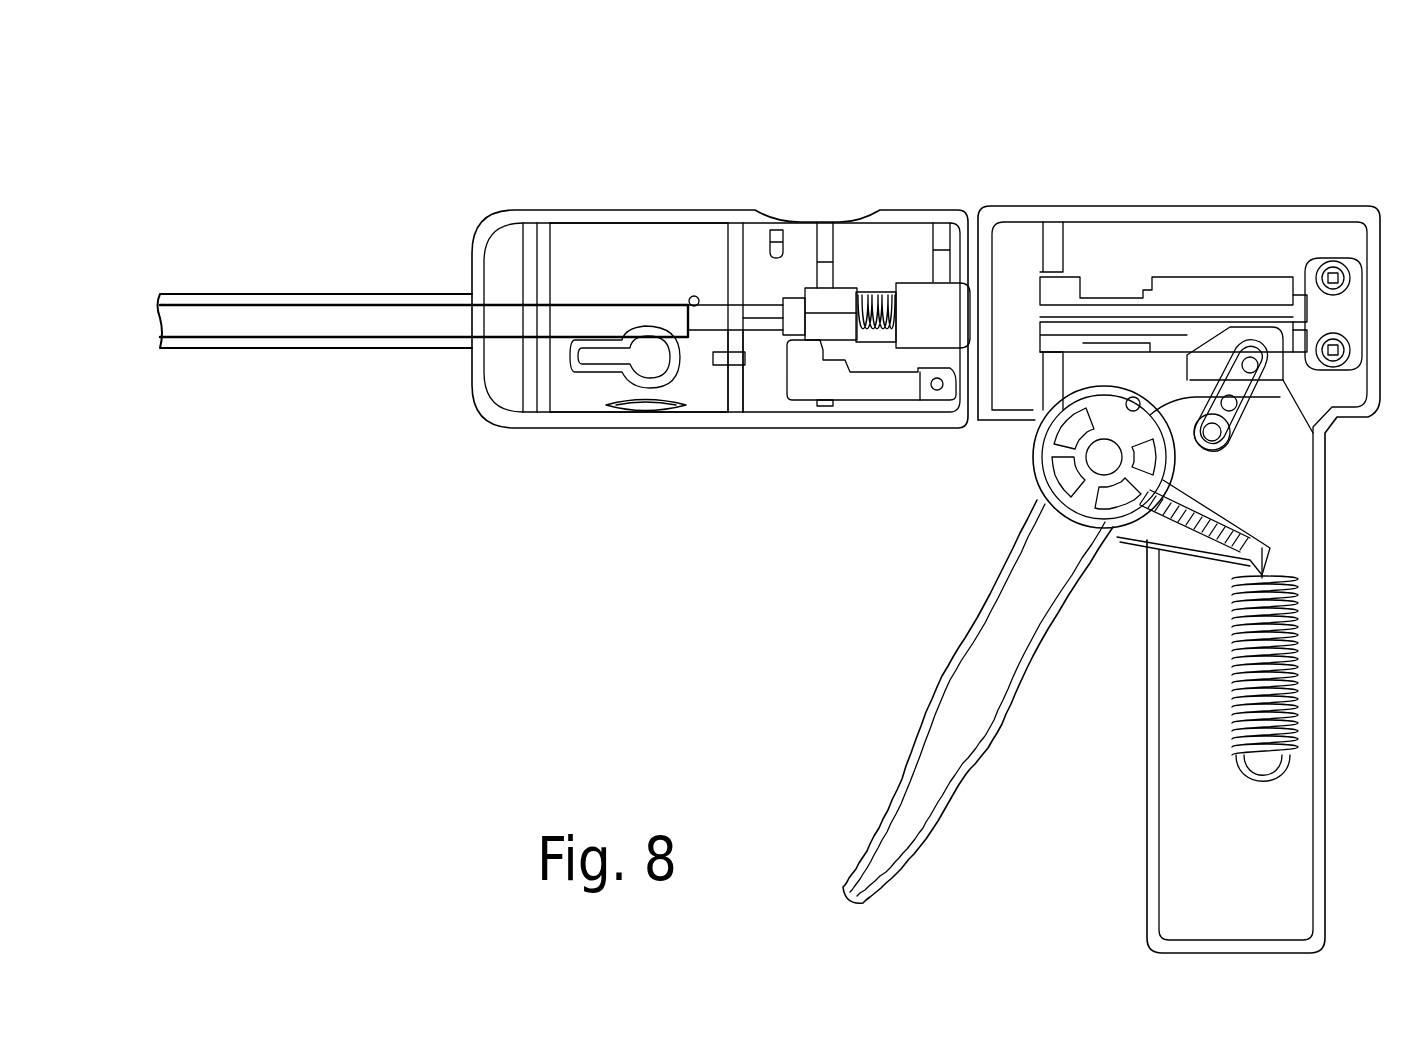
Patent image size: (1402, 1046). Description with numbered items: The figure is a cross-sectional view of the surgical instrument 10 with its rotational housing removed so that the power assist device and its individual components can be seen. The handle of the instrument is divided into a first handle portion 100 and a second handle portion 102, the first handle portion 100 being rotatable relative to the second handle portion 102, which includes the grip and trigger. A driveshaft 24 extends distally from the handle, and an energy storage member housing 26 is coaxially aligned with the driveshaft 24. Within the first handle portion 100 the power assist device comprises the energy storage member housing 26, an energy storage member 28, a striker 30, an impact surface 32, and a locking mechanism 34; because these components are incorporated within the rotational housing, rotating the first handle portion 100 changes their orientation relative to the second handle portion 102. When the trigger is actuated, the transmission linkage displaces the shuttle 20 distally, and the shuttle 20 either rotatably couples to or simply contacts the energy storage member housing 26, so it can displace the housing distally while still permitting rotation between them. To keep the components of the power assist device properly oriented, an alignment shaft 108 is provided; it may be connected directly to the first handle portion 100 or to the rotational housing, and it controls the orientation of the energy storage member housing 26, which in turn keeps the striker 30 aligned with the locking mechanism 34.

The surgical instrument 10 is at (340, 243).
The first handle portion 100 is at (969, 160).
The second handle portion 102 is at (1388, 162).
The shuttle 20 is at (1073, 292).
The driveshaft 24 is at (723, 318).
The energy storage member housing 26 is at (933, 288).
The energy storage member 28 is at (882, 290).
The striker 30 is at (838, 308).
The impact surface 32 is at (790, 310).
The locking mechanism 34 is at (866, 381).
The alignment shaft 108 is at (762, 361).